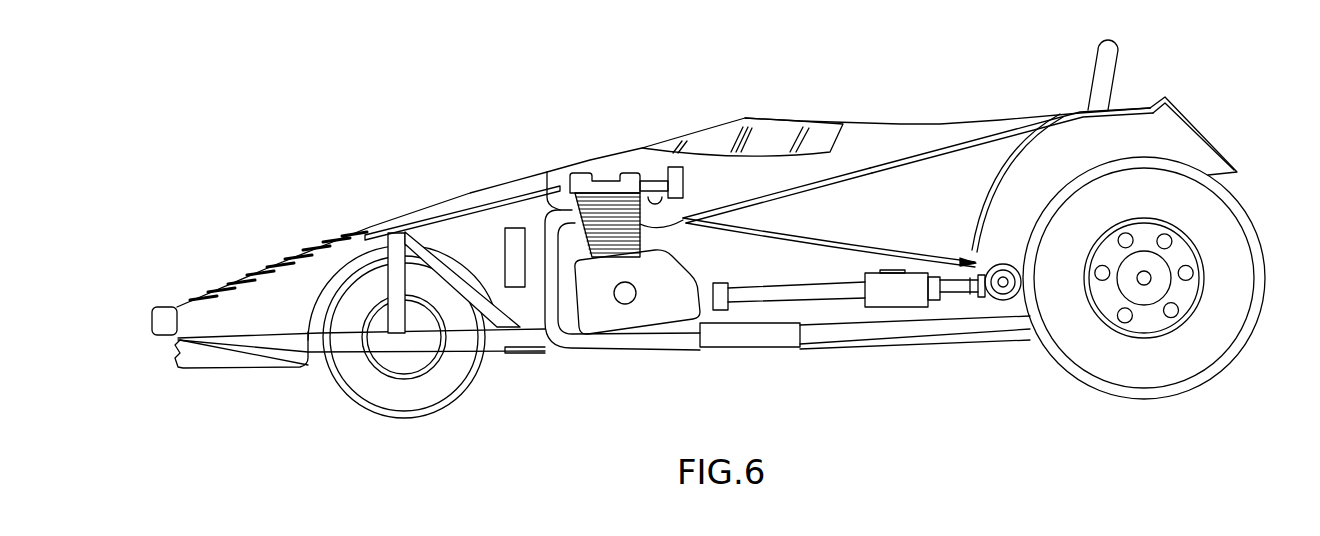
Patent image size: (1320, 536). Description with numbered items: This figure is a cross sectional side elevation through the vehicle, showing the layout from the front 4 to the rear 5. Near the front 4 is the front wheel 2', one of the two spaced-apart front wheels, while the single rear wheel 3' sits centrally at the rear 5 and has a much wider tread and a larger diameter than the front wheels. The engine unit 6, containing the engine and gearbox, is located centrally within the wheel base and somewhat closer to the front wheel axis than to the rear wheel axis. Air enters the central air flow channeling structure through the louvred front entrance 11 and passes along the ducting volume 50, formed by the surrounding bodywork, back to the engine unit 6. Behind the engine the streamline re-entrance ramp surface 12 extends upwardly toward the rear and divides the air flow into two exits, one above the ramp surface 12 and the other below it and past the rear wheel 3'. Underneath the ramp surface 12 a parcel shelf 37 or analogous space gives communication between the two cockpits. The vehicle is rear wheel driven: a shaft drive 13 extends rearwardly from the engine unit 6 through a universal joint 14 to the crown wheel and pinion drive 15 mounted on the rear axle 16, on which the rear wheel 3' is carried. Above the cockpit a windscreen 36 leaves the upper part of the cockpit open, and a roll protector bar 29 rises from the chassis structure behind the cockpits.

The front 4 is at (140, 334).
The rear 5 is at (1300, 268).
The front wheel 2' is at (403, 344).
The rear wheel 3' is at (1144, 278).
The engine unit 6 is at (603, 197).
The louvred front entrance 11 is at (263, 283).
The ramp surface 12 is at (777, 200).
The shaft drive 13 is at (790, 292).
The universal joint 14 is at (1003, 280).
The crown wheel and pinion drive 15 is at (1142, 297).
The rear axle 16 is at (1146, 276).
The roll protector bar 29 is at (1102, 72).
The windscreen 36 is at (703, 138).
The parcel shelf 37 is at (867, 177).
The ducting volume 50 is at (460, 222).